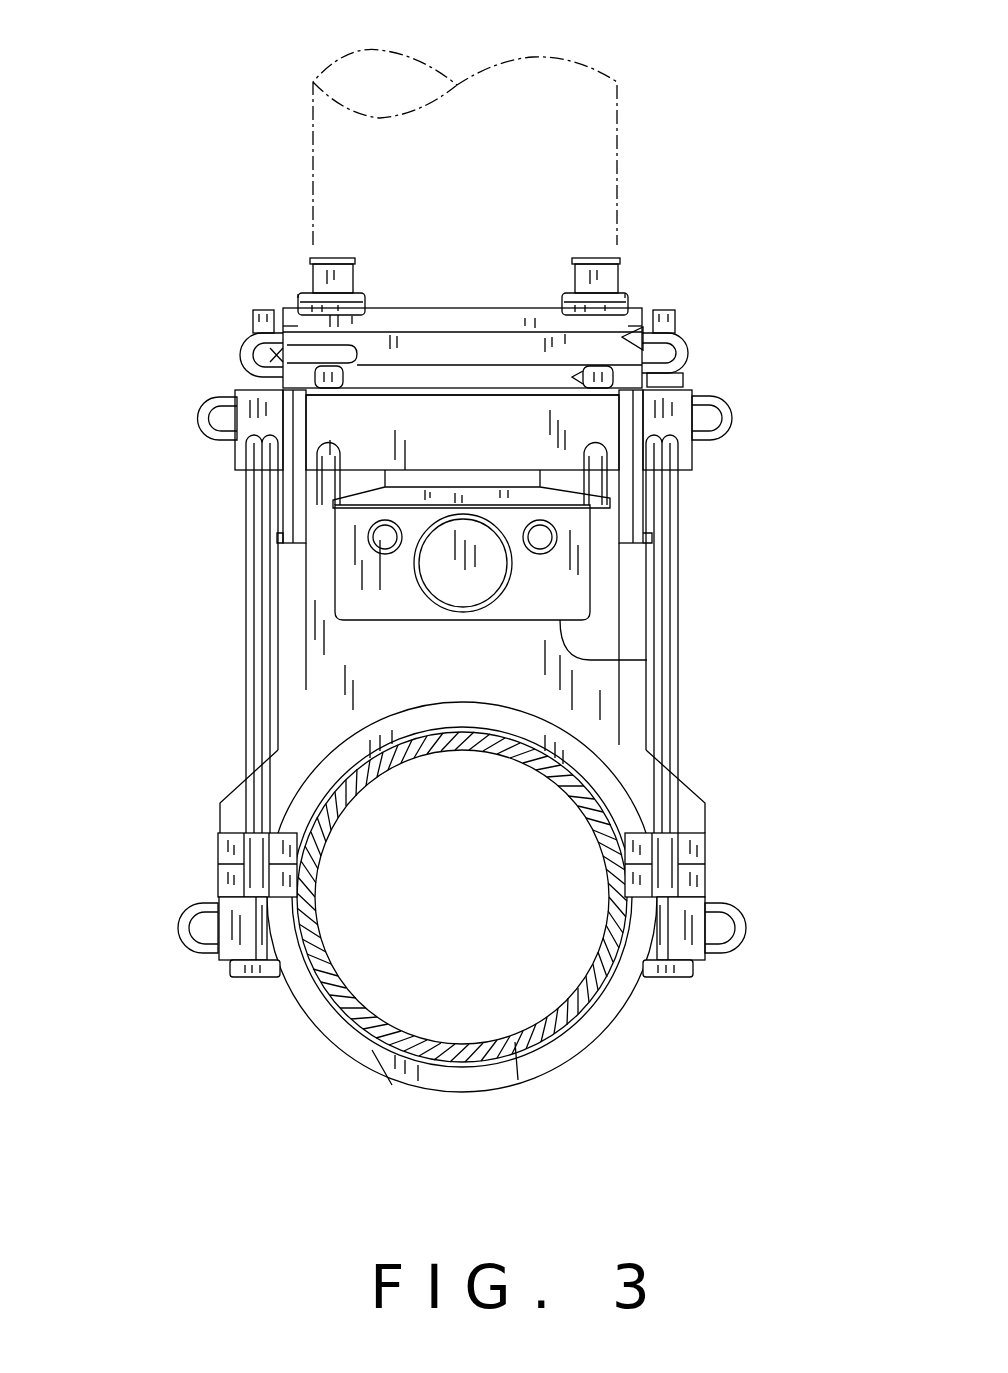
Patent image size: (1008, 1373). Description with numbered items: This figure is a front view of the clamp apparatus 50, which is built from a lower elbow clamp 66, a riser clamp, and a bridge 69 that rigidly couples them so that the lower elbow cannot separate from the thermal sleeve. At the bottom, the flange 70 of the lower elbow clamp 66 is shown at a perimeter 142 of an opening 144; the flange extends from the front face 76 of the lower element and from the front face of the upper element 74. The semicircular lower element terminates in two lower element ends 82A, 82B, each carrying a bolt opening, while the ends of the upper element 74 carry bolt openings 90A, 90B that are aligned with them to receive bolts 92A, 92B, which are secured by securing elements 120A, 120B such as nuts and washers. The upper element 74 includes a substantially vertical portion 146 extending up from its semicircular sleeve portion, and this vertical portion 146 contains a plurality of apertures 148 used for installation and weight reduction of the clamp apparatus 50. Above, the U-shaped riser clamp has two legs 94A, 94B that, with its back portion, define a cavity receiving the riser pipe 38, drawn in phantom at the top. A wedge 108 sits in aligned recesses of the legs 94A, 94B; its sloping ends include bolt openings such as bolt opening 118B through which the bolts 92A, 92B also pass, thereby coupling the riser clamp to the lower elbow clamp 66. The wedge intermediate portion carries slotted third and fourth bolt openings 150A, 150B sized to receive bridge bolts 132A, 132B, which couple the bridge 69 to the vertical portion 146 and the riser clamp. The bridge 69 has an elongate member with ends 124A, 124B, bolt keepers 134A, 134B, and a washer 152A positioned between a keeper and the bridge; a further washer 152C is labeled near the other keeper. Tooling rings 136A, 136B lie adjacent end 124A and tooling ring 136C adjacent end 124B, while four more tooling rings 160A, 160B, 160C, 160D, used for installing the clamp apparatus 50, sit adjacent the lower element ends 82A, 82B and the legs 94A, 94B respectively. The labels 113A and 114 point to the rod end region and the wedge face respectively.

The riser pipe 38 is at (533, 57).
The clamp apparatus 50 is at (755, 100).
The lower elbow clamp 66 is at (630, 712).
The bridge 69 is at (528, 308).
The flange 70 is at (378, 1043).
The upper element 74 is at (300, 657).
The front face 76 is at (430, 1082).
The lower element end 82A is at (218, 900).
The lower element end 82B is at (705, 900).
The bolt opening 90A is at (255, 838).
The bolt opening 90B is at (668, 852).
The bolt 92A is at (262, 561).
The bolt 92B is at (665, 635).
The leg 94A is at (290, 497).
The leg 94B is at (630, 502).
The wedge 108 is at (423, 458).
The rod end 113A is at (262, 459).
The block face 114 is at (461, 399).
The bolt opening 118B is at (663, 450).
The securing element 120A is at (253, 323).
The securing element 120B is at (676, 330).
The end 124A is at (290, 330).
The end 124B is at (640, 318).
The bridge bolt 132A is at (337, 257).
The bridge bolt 132B is at (600, 257).
The bolt keeper 134A is at (310, 258).
The bolt keeper 134B is at (616, 273).
The tooling ring 136A is at (240, 348).
The tooling ring 136B is at (253, 377).
The tooling ring 136C is at (690, 356).
The perimeter 142 is at (515, 1042).
The opening 144 is at (365, 992).
The substantially vertical portion 146 is at (650, 660).
The apertures 148 is at (420, 587).
The slotted third bolt opening 150A is at (258, 436).
The slotted fourth bolt opening 150B is at (665, 430).
The washer 152A is at (298, 298).
The flange 152C is at (625, 297).
The tooling ring 160A is at (180, 927).
The tooling ring 160B is at (747, 924).
The tooling ring 160C is at (195, 420).
The tooling ring 160D is at (730, 418).